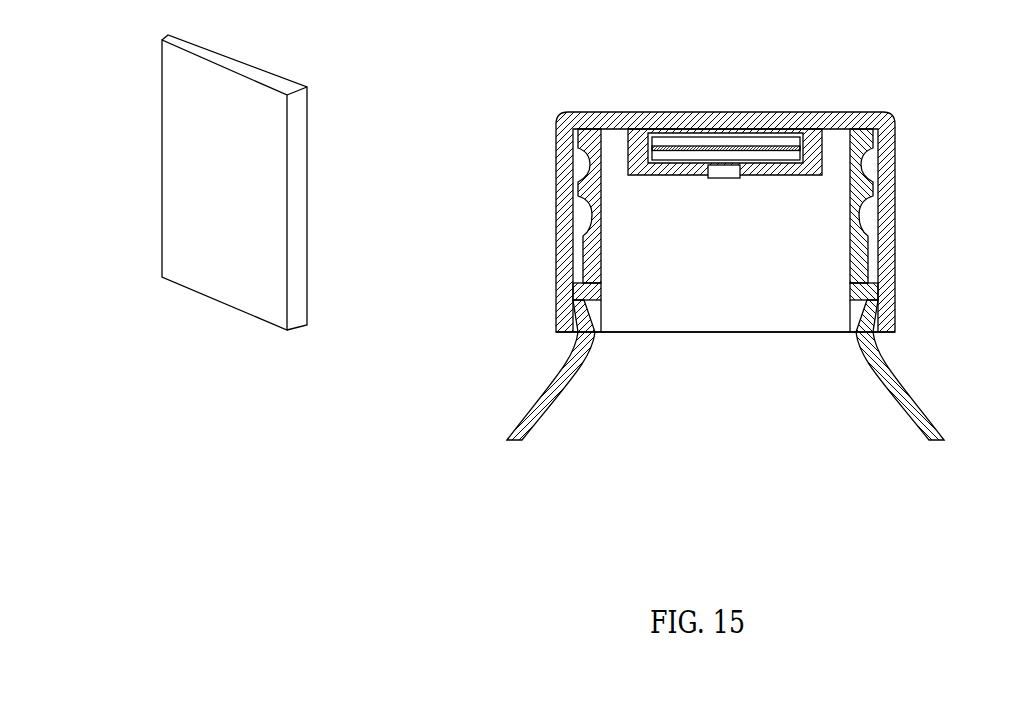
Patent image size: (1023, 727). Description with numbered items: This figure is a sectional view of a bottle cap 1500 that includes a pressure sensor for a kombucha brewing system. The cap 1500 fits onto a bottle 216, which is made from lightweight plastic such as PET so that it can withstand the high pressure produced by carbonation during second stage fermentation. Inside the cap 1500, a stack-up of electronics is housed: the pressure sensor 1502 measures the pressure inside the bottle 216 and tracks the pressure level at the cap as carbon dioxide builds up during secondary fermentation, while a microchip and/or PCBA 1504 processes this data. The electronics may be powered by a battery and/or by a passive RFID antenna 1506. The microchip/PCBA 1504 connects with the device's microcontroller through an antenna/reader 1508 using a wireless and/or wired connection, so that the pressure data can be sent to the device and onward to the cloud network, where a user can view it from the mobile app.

The bottle cap 1500 is at (556, 170).
The pressure sensor 1502 is at (740, 177).
The microchip and/or PCBA 1504 is at (797, 160).
The passive RFID antenna 1506 is at (822, 142).
The antenna/reader 1508 is at (202, 241).
The bottle 216 is at (556, 372).